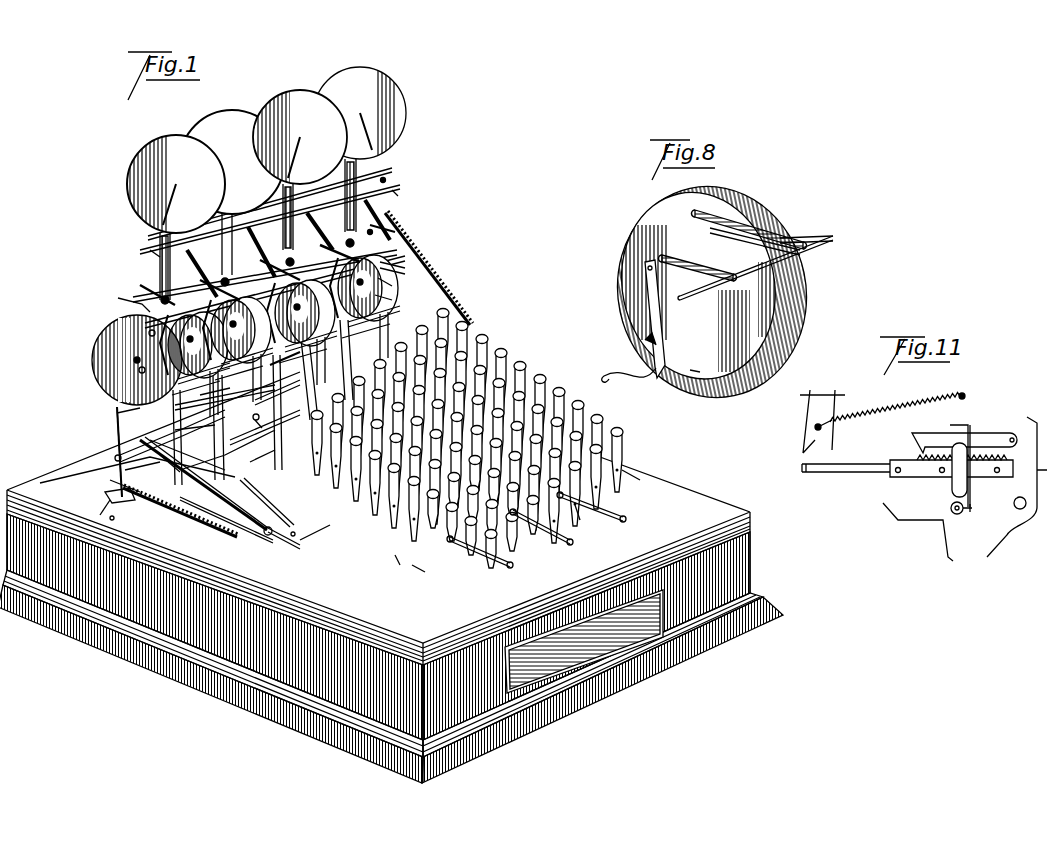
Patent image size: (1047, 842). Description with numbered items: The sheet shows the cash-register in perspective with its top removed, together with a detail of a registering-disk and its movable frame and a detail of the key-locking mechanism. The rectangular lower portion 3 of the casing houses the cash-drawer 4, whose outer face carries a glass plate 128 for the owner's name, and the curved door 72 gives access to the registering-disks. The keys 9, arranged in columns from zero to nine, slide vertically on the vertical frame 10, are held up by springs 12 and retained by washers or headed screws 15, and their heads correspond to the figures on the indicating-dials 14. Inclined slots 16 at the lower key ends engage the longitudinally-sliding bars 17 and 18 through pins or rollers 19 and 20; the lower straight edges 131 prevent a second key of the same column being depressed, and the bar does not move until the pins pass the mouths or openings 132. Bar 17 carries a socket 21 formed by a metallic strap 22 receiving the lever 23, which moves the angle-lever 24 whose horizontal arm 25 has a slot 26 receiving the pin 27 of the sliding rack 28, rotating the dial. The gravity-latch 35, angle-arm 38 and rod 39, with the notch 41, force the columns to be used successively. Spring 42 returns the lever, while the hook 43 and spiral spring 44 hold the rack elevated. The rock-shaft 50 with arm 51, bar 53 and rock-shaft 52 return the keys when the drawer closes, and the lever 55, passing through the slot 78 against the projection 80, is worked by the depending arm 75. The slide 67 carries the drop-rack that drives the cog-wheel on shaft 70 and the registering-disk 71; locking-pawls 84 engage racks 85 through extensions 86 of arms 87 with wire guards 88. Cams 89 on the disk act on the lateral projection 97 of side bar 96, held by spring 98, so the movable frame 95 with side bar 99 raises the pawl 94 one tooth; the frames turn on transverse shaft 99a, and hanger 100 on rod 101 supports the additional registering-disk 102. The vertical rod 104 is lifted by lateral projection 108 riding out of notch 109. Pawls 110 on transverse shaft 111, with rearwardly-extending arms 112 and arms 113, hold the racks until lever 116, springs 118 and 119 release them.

In FIG. 1, the rectangular lower portion 3 is at (665, 485).
In FIG. 1, the cash-drawer 4 is at (720, 590).
In FIG. 1, the keys 9 is at (235, 225).
In FIG. 1, the vertical frame 10 is at (130, 498).
In FIG. 11, the vertical frame 10 is at (925, 520).
In FIG. 1, the springs 12 is at (575, 515).
In FIG. 1, the indicating-dials 14 is at (150, 222).
In FIG. 1, the washers or headed screws 15 is at (480, 560).
In FIG. 1, the inclined slots 16 is at (320, 535).
In FIG. 1, the longitudinally-sliding bar 17 is at (430, 580).
In FIG. 1, the longitudinally-sliding bar 18 is at (520, 557).
In FIG. 1, the pins or rollers 19 is at (292, 535).
In FIG. 1, the pins or rollers 20 is at (605, 538).
In FIG. 1, the socket 21 is at (200, 480).
In FIG. 1, the metallic strap 22 is at (228, 500).
In FIG. 1, the lever 23 is at (180, 478).
In FIG. 1, the angle-lever 24 is at (385, 298).
In FIG. 11, the angle-lever 24 is at (810, 400).
In FIG. 1, the horizontal arm 25 is at (322, 236).
In FIG. 1, the slot 26 is at (170, 287).
In FIG. 1, the pin 27 is at (215, 260).
In FIG. 1, the sliding rack 28 is at (155, 252).
In FIG. 1, the gravity-latch 35 is at (245, 515).
In FIG. 1, the angle-arm 38 is at (180, 515).
In FIG. 1, the rod 39 is at (250, 462).
In FIG. 1, the notch 41 is at (175, 430).
In FIG. 1, the spring 42 is at (200, 395).
In FIG. 1, the lateral projection or hook 43 is at (385, 282).
In FIG. 11, the lateral projection or hook 43 is at (815, 430).
In FIG. 11, the spiral spring 44 is at (895, 405).
In FIG. 1, the rock-shaft 50 is at (118, 455).
In FIG. 1, the arm 51 is at (118, 440).
In FIG. 1, the rock-shaft 52 is at (285, 550).
In FIG. 1, the bar 53 is at (125, 470).
In FIG. 1, the lever 55 is at (110, 480).
In FIG. 11, the slide 67 is at (830, 472).
In FIG. 1, the shaft 70 is at (175, 352).
In FIG. 1, the registering-disk 71 is at (238, 349).
In FIG. 8, the registering-disk 71 is at (800, 312).
In FIG. 1, the curved door 72 is at (625, 475).
In FIG. 1, the depending arm 75 is at (117, 413).
In FIG. 1, the slot 78 is at (100, 515).
In FIG. 1, the projection 80 is at (110, 520).
In FIG. 11, the locking-pawls 84 is at (935, 437).
In FIG. 11, the racks 85 is at (925, 477).
In FIG. 11, the extensions 86 is at (953, 480).
In FIG. 11, the arms 87 is at (968, 502).
In FIG. 11, the wire guards 88 is at (970, 428).
In FIG. 1, the cams 89 is at (400, 265).
In FIG. 8, the cams 89 is at (700, 372).
In FIG. 8, the pawl 94 is at (660, 310).
In FIG. 8, the movable frame 95 is at (752, 243).
In FIG. 1, the side bar 96 is at (385, 228).
In FIG. 8, the side bar 96 is at (782, 238).
In FIG. 8, the lateral projection 97 is at (700, 225).
In FIG. 1, the spring 98 is at (300, 240).
In FIG. 1, the side bar 99 is at (150, 335).
In FIG. 8, the side bar 99 is at (672, 264).
In FIG. 8, the transverse shaft 99a is at (755, 274).
In FIG. 1, the hanger 100 is at (140, 370).
In FIG. 1, the rod 101 is at (150, 410).
In FIG. 1, the additional registering-disk 102 is at (120, 362).
In FIG. 1, the vertical rod 104 is at (270, 365).
In FIG. 1, the lateral projection 108 is at (118, 465).
In FIG. 1, the notch 109 is at (170, 478).
In FIG. 1, the spring-actuated pawls 110 is at (160, 238).
In FIG. 1, the transverse shaft 111 is at (240, 215).
In FIG. 1, the rearwardly-extending arms 112 is at (150, 250).
In FIG. 1, the arms 113 is at (170, 235).
In FIG. 1, the lever 116 is at (385, 180).
In FIG. 1, the spring 118 is at (465, 295).
In FIG. 1, the spring 119 is at (395, 192).
In FIG. 1, the glass plate 128 is at (592, 610).
In FIG. 1, the lower straight edges 131 is at (395, 560).
In FIG. 1, the mouths or openings 132 is at (415, 570).